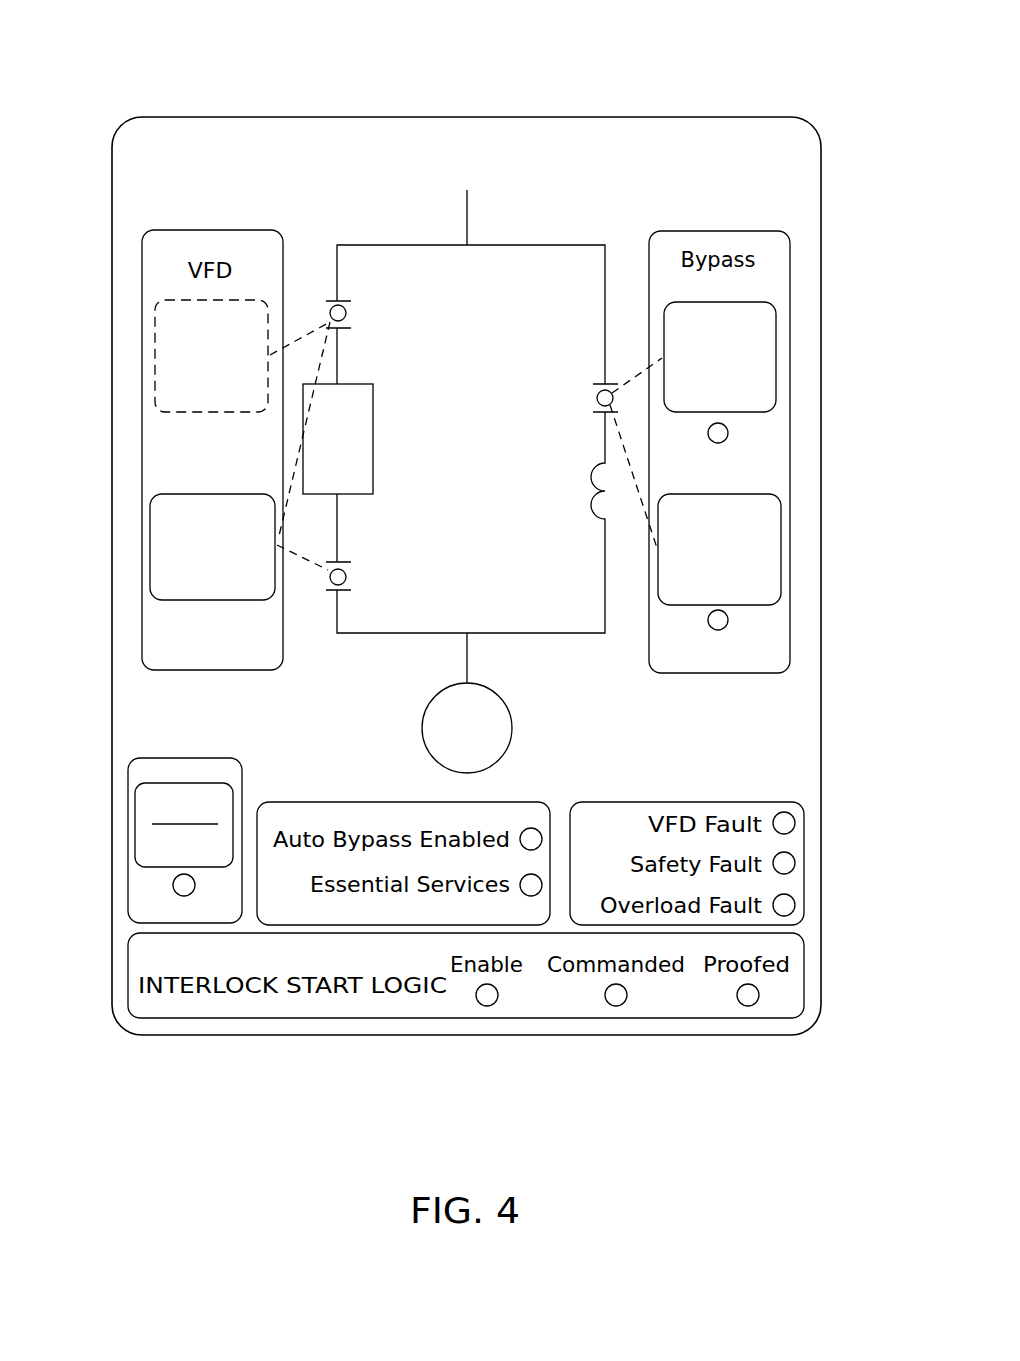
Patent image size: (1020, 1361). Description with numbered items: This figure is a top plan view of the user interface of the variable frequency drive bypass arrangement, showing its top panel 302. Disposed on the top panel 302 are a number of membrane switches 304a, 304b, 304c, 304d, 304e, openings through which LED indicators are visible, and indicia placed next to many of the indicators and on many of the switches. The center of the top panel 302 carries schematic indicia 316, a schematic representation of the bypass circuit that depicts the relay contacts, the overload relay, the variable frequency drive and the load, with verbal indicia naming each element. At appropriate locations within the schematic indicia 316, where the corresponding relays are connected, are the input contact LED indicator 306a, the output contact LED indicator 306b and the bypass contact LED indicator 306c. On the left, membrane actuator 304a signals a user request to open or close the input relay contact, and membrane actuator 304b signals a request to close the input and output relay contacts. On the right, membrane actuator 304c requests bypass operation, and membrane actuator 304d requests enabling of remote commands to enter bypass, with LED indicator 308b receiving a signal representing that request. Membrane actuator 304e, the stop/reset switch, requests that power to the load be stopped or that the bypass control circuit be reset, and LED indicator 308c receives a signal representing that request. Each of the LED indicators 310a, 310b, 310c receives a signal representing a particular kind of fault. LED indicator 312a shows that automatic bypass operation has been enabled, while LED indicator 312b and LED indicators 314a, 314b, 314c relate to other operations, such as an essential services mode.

The top panel 302 is at (607, 117).
The schematic indicia 316 is at (549, 216).
The input contact LED indicator 306a is at (332, 306).
The output contact LED indicator 306b is at (343, 566).
The bypass contact LED indicator 306c is at (599, 393).
The membrane actuator 304a is at (166, 368).
The membrane actuator 304b is at (152, 555).
The membrane actuator 304c is at (762, 360).
The membrane actuator 304d is at (781, 552).
The membrane actuator 304e is at (150, 821).
The LED indicator 308c is at (173, 885).
The LED indicator 308b is at (730, 619).
The LED indicator 310a is at (796, 823).
The LED indicator 310b is at (796, 863).
The LED indicator 310c is at (796, 905).
The LED indicator 312a is at (536, 829).
The LED indicator 312b is at (537, 896).
The LED indicator 314a is at (487, 1006).
The LED indicator 314b is at (616, 1006).
The LED indicator 314c is at (748, 1006).